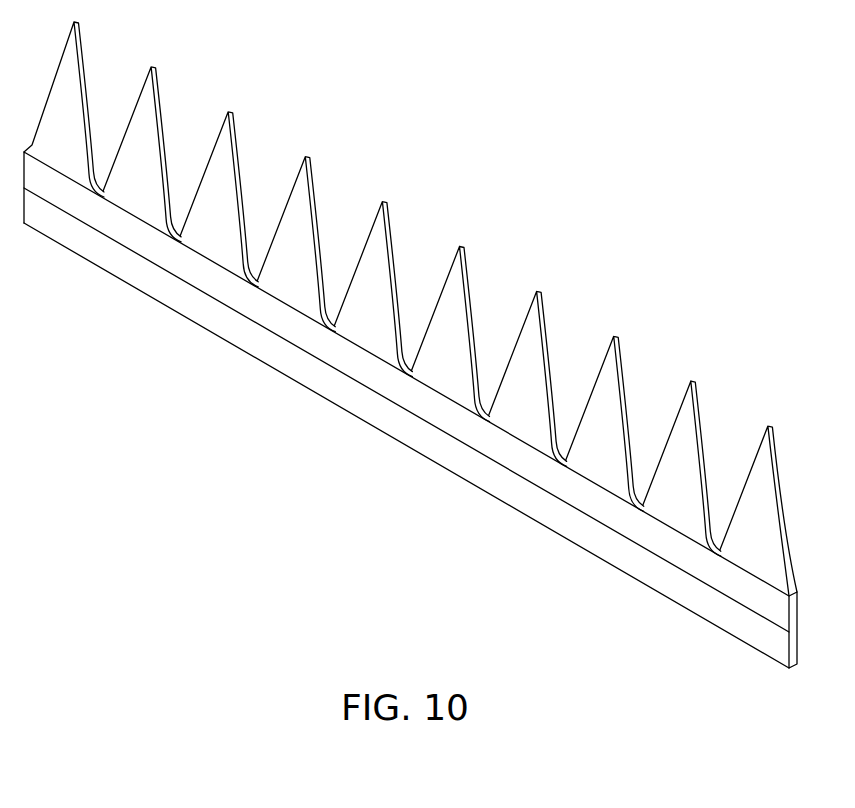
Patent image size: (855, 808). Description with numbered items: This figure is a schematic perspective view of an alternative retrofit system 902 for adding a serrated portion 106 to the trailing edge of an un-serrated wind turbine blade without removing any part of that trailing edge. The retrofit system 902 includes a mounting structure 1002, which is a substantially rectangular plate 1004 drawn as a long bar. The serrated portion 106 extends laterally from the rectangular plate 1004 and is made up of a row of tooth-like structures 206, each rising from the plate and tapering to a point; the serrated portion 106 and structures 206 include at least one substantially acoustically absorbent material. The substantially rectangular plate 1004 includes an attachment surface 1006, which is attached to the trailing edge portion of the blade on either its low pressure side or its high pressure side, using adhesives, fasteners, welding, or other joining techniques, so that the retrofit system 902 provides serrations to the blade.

The retrofit system 902 is at (600, 268).
The serrated portion 106 is at (714, 382).
The structures 206 is at (698, 453).
The mounting structure 1002 is at (368, 423).
The substantially rectangular plate 1004 is at (512, 507).
The attachment surface 1006 is at (622, 535).